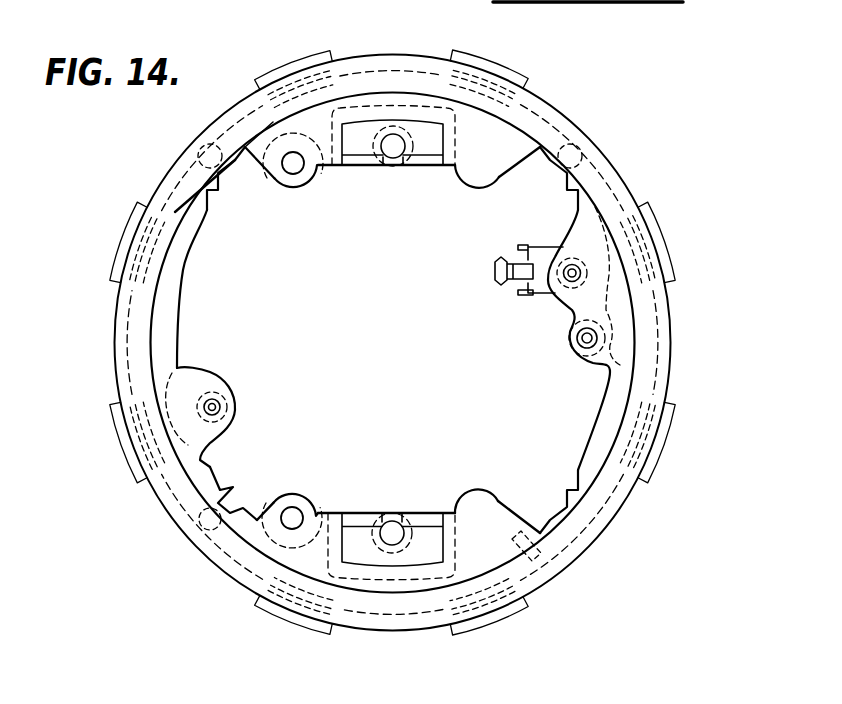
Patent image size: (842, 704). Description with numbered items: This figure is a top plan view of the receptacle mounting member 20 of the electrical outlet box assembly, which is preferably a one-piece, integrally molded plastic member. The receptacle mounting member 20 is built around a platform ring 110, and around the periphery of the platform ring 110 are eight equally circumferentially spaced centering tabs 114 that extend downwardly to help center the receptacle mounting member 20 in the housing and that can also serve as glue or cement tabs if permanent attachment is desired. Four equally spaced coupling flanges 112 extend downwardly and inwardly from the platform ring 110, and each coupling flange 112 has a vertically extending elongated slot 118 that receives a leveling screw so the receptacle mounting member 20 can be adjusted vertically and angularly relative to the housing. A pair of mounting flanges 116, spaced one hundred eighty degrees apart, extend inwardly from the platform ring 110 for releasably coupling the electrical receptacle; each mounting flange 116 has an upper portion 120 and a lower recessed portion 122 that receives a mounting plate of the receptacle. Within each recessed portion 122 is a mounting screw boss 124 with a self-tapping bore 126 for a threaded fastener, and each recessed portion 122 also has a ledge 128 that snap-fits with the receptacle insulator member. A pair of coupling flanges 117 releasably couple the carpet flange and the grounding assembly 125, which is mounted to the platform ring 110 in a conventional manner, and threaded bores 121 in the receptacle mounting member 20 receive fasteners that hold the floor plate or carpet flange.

The receptacle mounting member 20 is at (156, 161).
The platform ring 110 is at (128, 276).
The coupling flanges 112 is at (213, 203).
The centering tabs 114 is at (290, 62).
The mounting flanges 116 is at (454, 172).
The coupling flanges 117 is at (203, 366).
The elongated slot 118 is at (236, 174).
The upper portion 120 is at (319, 186).
The threaded bores 121 is at (226, 403).
The lower recessed portion 122 is at (450, 148).
The mounting screw boss 124 is at (397, 165).
The grounding assembly 125 is at (494, 285).
The self-tapping bore 126 is at (390, 150).
The ledge 128 is at (345, 168).